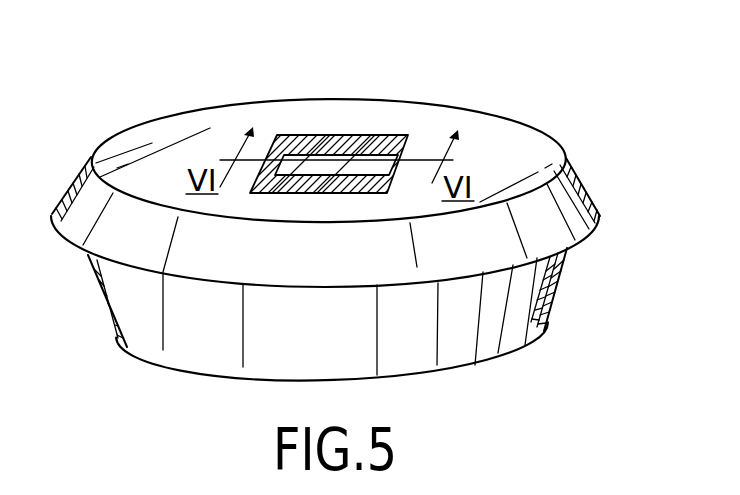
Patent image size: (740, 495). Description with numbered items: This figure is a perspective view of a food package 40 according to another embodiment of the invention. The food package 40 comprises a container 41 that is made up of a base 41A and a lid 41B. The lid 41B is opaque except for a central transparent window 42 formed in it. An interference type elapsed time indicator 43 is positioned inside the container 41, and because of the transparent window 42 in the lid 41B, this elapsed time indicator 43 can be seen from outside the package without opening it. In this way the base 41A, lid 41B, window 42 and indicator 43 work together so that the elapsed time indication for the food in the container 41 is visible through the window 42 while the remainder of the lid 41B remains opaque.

The food package 40 is at (552, 125).
The container 41 is at (542, 273).
The base 41A is at (527, 332).
The lid 41B is at (572, 193).
The transparent window 42 is at (380, 147).
The elapsed time indicator 43 is at (340, 150).